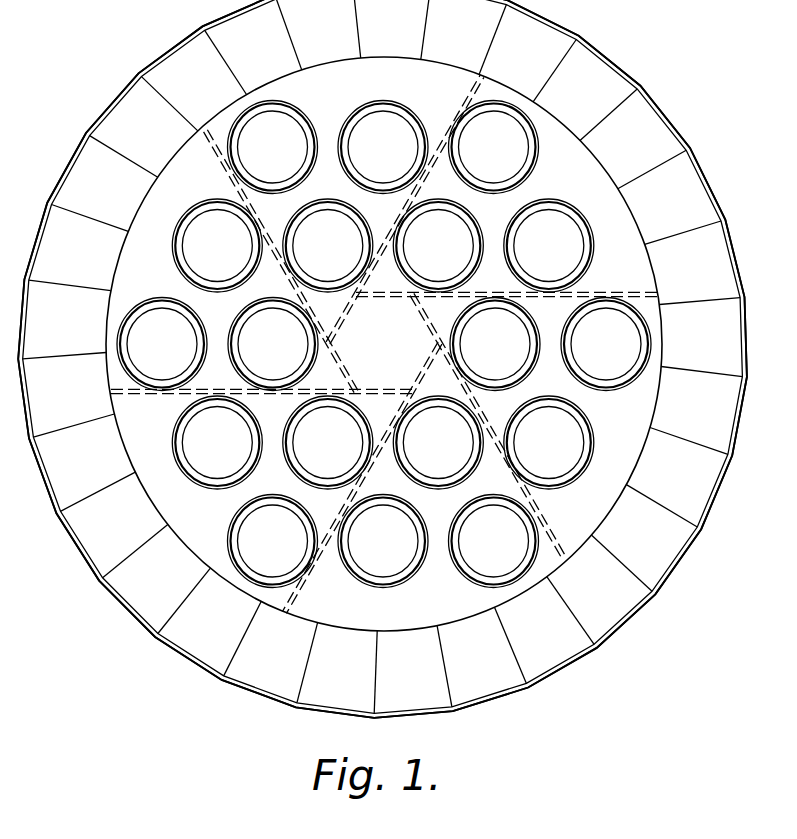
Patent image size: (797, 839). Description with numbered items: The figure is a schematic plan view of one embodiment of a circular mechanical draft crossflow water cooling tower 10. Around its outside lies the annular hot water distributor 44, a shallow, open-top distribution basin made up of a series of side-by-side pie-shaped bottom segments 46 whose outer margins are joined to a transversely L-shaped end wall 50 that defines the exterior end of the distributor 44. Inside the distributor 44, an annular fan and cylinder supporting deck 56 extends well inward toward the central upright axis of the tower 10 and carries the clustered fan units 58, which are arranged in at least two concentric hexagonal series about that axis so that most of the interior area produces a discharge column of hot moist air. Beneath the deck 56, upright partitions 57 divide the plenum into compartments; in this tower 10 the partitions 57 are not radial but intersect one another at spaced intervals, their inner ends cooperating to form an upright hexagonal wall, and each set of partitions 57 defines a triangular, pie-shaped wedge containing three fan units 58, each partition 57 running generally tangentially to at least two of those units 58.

The circular mechanical draft crossflow water cooling tower 10 is at (599, 35).
The annular hot water distributor 44 is at (490, 699).
The pie-shaped bottom segments 46 is at (553, 666).
The end wall 50 is at (627, 621).
The fan and cylinder supporting deck 56 is at (638, 407).
The partitions 57 is at (586, 291).
The fan units 58 is at (550, 193).